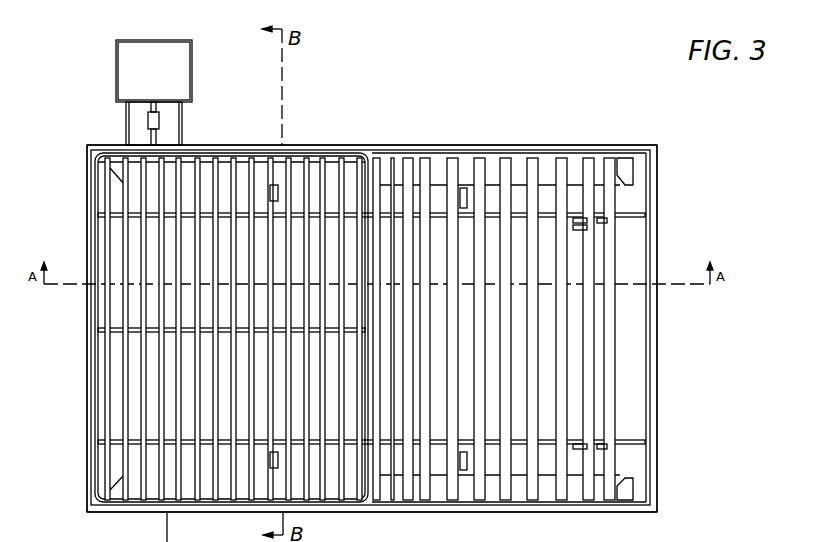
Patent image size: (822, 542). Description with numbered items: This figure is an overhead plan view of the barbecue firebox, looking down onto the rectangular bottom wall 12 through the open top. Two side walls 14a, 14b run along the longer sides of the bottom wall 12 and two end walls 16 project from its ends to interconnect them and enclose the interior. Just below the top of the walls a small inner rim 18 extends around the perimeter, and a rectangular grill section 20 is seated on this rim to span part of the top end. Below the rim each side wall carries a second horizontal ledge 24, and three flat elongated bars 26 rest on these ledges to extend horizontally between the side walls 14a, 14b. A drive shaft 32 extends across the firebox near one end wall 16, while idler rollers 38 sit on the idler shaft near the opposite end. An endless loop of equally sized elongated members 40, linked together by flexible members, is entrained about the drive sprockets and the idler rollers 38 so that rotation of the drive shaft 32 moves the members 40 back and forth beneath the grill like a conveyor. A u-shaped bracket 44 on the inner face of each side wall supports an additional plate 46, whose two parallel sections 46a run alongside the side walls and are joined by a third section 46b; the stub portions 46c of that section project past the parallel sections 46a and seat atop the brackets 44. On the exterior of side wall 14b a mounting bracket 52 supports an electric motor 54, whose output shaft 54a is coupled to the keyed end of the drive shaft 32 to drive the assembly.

The bottom wall 12 is at (573, 468).
The side wall 14a is at (641, 512).
The side wall 14b is at (622, 146).
The end wall 16 is at (90, 346).
The inner rim 18 is at (650, 202).
The grill section 20 is at (352, 148).
The second horizontal ledge 24 is at (490, 167).
The bar 26 is at (518, 172).
The drive shaft 32 is at (157, 138).
The idler roller 38 is at (600, 228).
The elongated member 40 is at (583, 383).
The u-shaped bracket 44 is at (388, 158).
The additional plate 46 is at (335, 195).
The parallel section 46a is at (437, 200).
The third section 46b is at (378, 425).
The stub portion 46c is at (381, 160).
The mounting bracket 52 is at (126, 126).
The electric motor 54 is at (125, 67).
The output shaft 54a is at (158, 113).